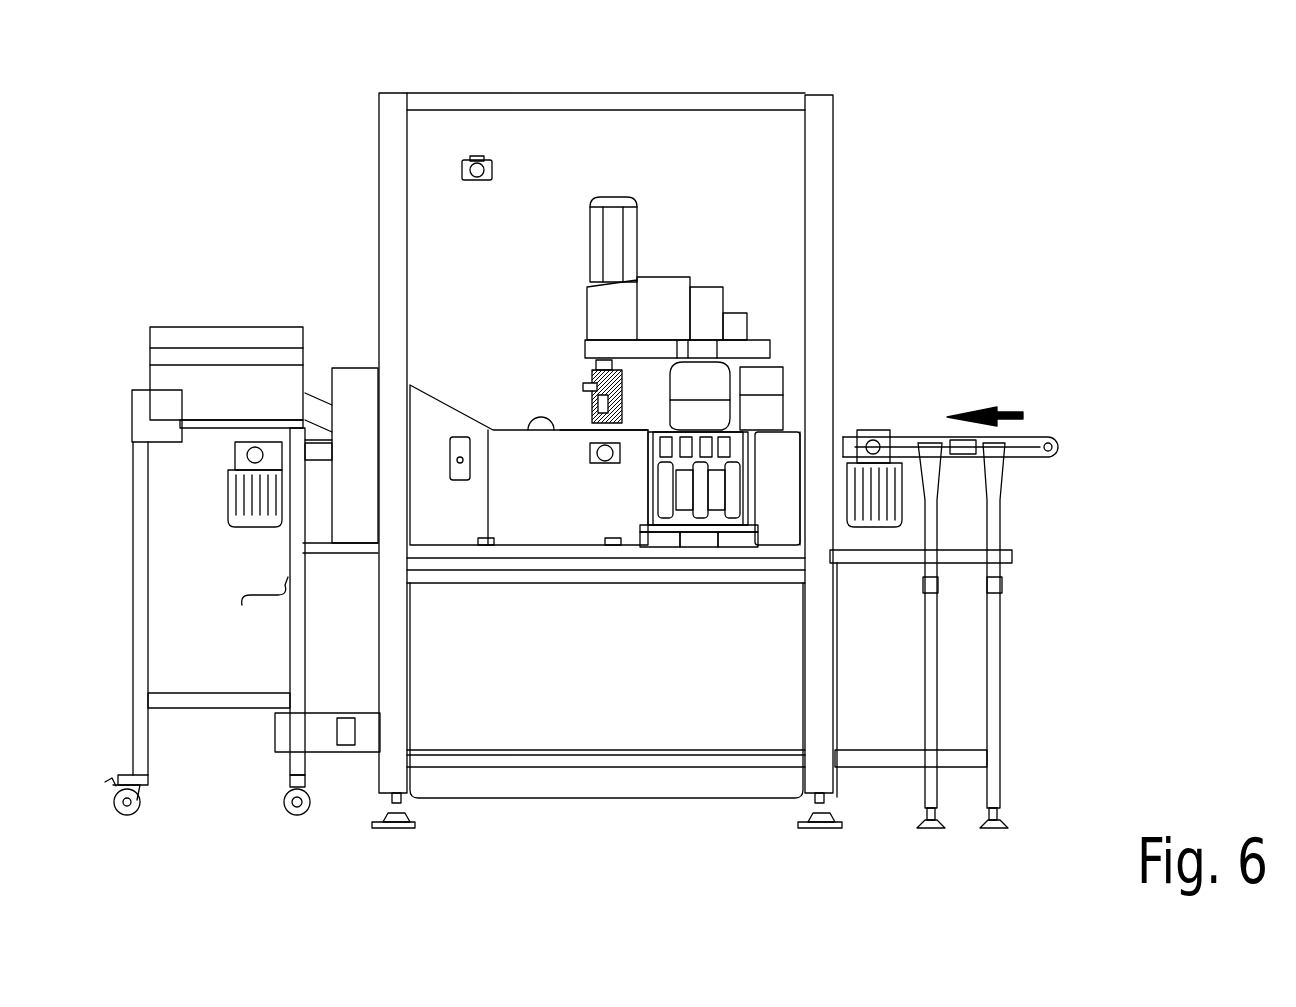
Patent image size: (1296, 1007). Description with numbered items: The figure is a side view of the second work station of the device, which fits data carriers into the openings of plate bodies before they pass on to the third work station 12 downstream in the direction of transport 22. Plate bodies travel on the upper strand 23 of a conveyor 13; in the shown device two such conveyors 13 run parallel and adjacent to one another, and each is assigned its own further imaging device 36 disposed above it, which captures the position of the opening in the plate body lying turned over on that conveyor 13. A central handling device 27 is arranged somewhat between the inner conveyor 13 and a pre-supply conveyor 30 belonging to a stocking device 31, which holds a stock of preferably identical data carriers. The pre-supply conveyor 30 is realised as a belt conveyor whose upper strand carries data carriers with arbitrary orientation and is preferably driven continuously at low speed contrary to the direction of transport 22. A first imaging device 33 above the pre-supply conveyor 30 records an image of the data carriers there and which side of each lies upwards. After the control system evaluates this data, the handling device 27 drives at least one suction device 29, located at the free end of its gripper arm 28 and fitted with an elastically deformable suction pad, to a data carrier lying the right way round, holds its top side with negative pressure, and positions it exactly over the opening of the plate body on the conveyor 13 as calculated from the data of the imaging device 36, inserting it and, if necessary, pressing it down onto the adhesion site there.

The third work station 12 is at (942, 79).
The conveyor 13 is at (1050, 460).
The direction of transport 22 is at (1012, 415).
The upper strand 23 is at (1023, 437).
The handling device 27 is at (663, 290).
The gripper arm 28 is at (587, 382).
The suction device 29 is at (590, 413).
The pre-supply conveyor 30 is at (520, 432).
The stocking device 31 is at (222, 750).
The first imaging device 33 is at (605, 456).
The further imaging device 36 is at (478, 158).